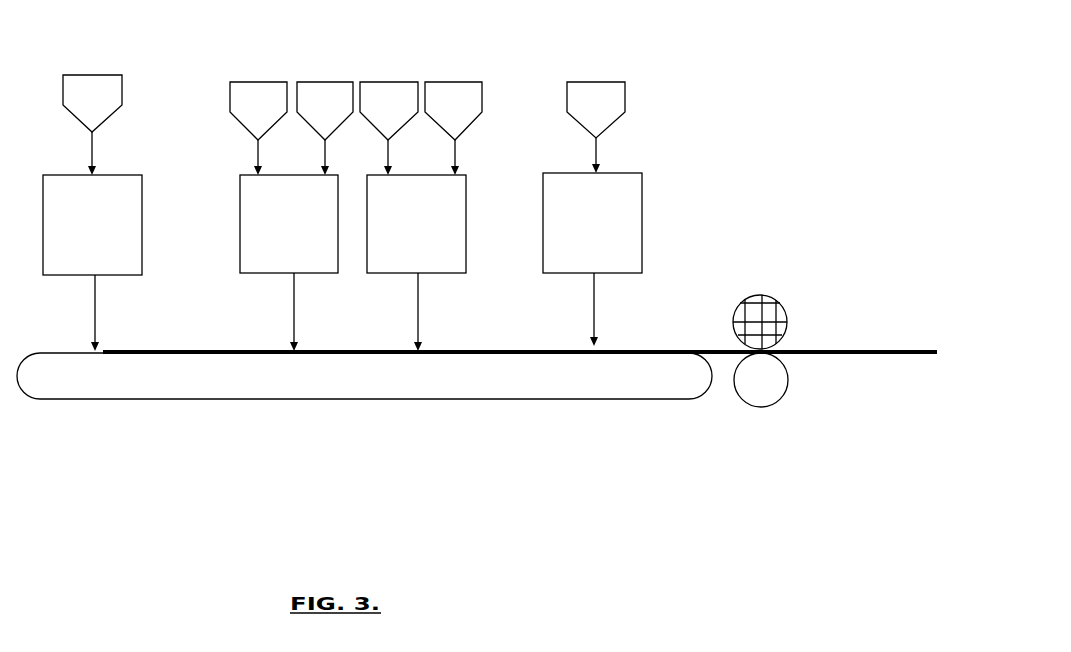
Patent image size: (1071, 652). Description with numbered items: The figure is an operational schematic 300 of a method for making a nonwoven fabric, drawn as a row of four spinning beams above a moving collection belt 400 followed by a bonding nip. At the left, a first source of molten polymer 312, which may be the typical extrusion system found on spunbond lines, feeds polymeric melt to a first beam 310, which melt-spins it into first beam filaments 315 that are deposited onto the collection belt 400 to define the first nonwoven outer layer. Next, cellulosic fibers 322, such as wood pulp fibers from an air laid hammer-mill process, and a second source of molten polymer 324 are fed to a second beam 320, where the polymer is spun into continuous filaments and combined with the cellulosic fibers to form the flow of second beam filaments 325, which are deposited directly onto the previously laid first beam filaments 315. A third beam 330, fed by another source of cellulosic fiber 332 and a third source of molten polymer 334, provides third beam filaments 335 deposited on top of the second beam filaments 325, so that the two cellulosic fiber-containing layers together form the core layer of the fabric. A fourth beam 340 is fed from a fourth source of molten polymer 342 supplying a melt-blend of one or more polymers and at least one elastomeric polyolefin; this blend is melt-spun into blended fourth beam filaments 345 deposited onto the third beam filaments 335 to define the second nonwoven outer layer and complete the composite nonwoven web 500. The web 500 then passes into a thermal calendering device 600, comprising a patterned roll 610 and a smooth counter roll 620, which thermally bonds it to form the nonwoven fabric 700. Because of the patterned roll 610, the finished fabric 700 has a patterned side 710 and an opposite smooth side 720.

The operational schematic 300 is at (653, 72).
The first beam 310 is at (92, 225).
The first source of molten polymer 312 is at (92, 125).
The first beam filaments 315 is at (105, 318).
The second beam 320 is at (289, 224).
The cellulosic fibers 322 is at (258, 128).
The second source of molten polymer 324 is at (325, 128).
The second beam filaments 325 is at (287, 326).
The third beam 330 is at (416, 224).
The source of cellulosic fiber 332 is at (389, 128).
The third source of molten polymer 334 is at (453, 128).
The third beam filaments 335 is at (408, 327).
The fourth beam 340 is at (592, 223).
The fourth source of molten polymer 342 is at (596, 127).
The fourth beam filaments 345 is at (590, 313).
The collection belt 400 is at (75, 407).
The composite nonwoven web 500 is at (722, 356).
The thermal calendering device 600 is at (773, 321).
The patterned roll 610 is at (745, 297).
The smooth counter roll 620 is at (775, 410).
The nonwoven fabric 700 is at (857, 350).
The patterned side 710 is at (892, 342).
The smooth side 720 is at (897, 362).